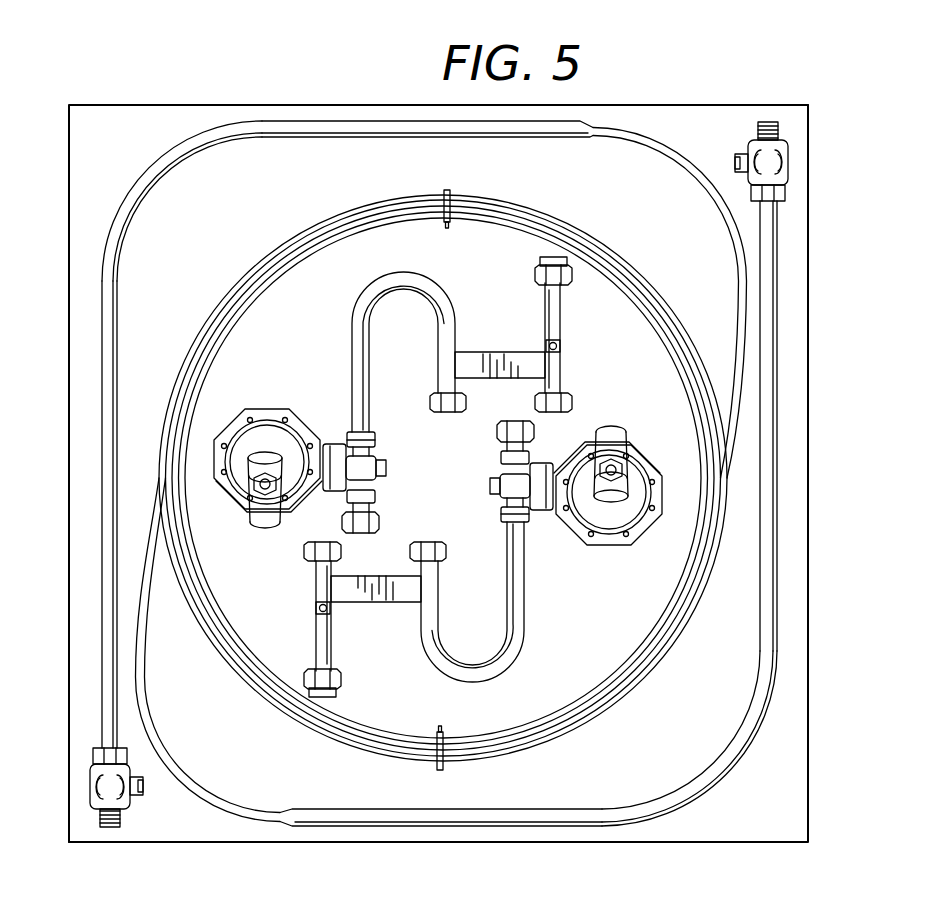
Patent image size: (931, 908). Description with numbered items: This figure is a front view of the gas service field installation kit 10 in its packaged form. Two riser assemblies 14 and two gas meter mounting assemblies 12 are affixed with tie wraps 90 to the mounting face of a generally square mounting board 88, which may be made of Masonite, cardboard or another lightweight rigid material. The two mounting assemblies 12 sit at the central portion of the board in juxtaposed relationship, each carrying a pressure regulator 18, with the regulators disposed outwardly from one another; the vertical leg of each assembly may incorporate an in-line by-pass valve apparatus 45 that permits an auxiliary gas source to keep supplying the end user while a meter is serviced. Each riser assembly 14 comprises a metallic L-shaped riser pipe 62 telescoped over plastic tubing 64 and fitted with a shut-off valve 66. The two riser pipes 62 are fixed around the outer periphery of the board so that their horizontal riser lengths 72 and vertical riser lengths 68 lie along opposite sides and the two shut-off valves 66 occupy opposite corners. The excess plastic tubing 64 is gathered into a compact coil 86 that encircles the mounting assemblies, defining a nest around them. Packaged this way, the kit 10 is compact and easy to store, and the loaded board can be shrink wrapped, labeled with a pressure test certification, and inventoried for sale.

The gas service field installation kit 10 is at (818, 337).
The gas meter mounting assembly 12 is at (446, 286).
The riser assembly 14 is at (447, 474).
The pressure regulator 18 is at (278, 408).
The in-line by-pass valve apparatus 45 is at (560, 348).
The riser pipe 62 is at (146, 213).
The plastic tubing 64 is at (690, 176).
The shut-off valve 66 is at (793, 152).
The vertical riser length 68 is at (100, 405).
The horizontal riser length 72 is at (312, 120).
The compact coil 86 is at (668, 308).
The mounting board 88 is at (810, 745).
The tie wraps 90 is at (446, 190).